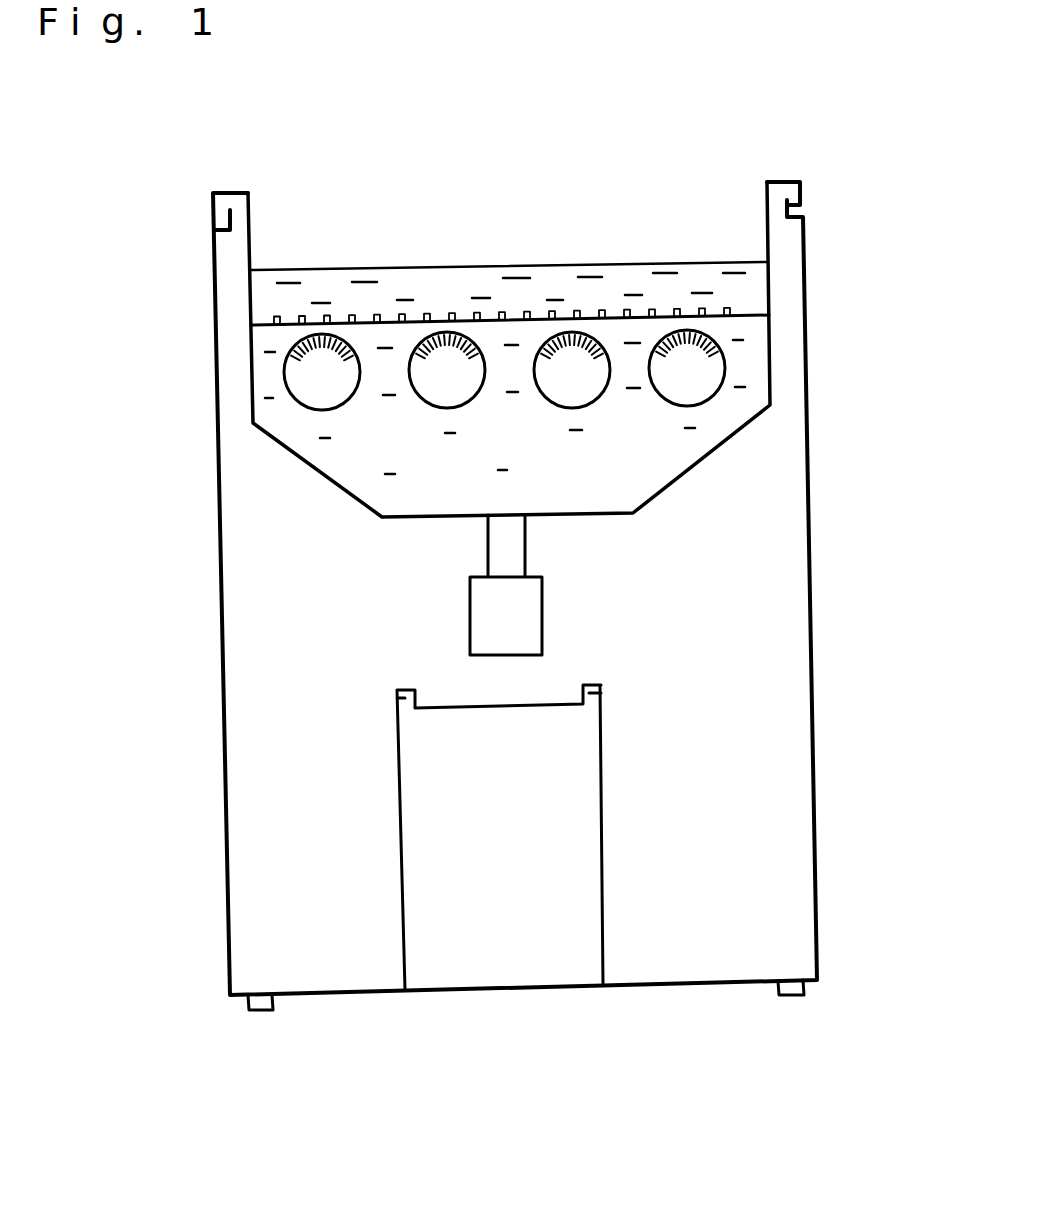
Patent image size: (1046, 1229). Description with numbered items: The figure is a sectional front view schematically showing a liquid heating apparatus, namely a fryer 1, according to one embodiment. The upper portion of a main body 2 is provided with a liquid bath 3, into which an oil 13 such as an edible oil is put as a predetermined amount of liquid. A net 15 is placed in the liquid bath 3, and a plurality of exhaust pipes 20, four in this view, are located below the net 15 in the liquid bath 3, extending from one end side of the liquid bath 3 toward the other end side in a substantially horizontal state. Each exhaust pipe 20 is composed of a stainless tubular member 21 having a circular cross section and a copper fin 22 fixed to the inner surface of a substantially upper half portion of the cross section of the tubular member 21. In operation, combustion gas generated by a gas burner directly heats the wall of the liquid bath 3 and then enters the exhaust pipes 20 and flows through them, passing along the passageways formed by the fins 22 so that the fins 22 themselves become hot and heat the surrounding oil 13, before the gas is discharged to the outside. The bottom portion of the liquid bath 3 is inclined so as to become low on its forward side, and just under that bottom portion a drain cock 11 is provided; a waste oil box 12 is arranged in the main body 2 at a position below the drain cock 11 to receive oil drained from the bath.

The fryer 1 is at (845, 234).
The main body 2 is at (216, 523).
The liquid bath 3 is at (771, 365).
The drain cock 11 is at (545, 615).
The waste oil box 12 is at (503, 978).
The oil 13 is at (293, 283).
The net 15 is at (453, 322).
The exhaust pipe 20 is at (294, 397).
The tubular member 21 is at (612, 364).
The fin 22 is at (556, 338).